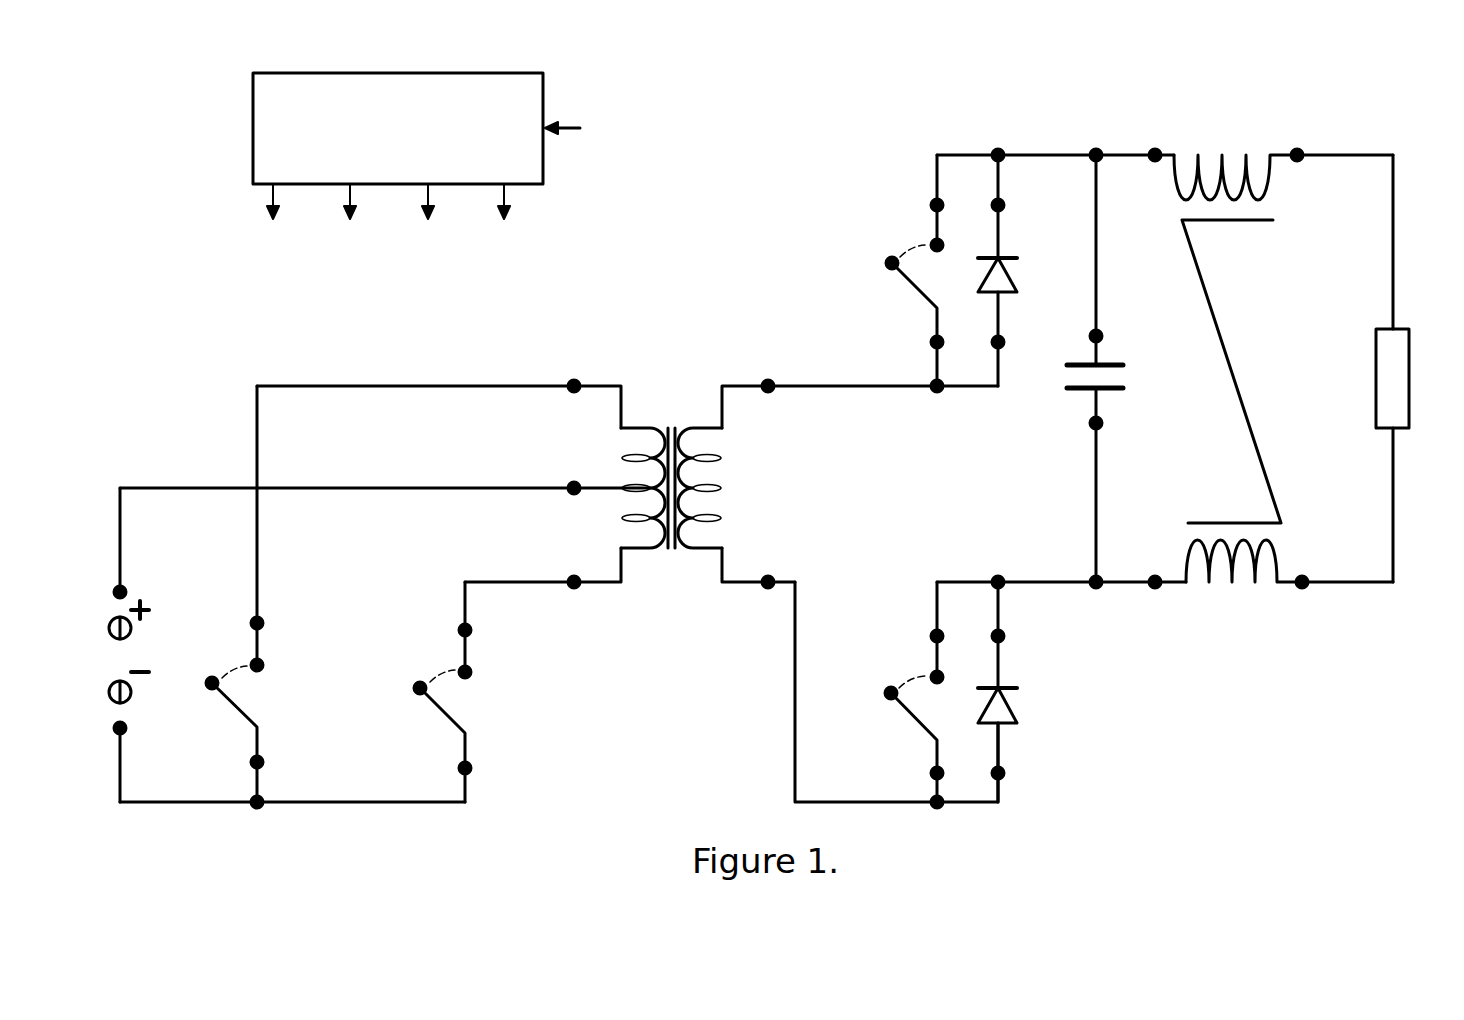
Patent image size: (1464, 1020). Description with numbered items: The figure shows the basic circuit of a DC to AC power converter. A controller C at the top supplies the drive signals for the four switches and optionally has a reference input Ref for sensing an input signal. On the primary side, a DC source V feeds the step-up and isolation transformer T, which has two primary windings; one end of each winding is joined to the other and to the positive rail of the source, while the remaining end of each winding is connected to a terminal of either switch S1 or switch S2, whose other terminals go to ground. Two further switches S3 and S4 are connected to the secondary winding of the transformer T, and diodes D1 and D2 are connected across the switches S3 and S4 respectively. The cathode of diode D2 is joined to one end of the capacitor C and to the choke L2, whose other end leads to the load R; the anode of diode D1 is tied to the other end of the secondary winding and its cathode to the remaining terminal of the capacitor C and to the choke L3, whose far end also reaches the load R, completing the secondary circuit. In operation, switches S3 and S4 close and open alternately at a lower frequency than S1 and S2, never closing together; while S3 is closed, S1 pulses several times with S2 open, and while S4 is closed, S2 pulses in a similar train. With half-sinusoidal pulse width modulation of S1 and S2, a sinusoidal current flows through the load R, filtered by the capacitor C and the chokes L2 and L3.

The controller / capacitor C is at (701, 330).
The reference input Ref is at (606, 137).
The DC source V is at (114, 645).
The switch S1 is at (234, 594).
The switch S2 is at (442, 692).
The switch S3 is at (914, 695).
The switch S4 is at (914, 273).
The step-up and isolation transformer T is at (809, 466).
The diode D1 is at (1014, 692).
The diode D2 is at (1018, 270).
The choke L2 is at (1283, 156).
The choke L3 is at (1289, 583).
The load R is at (1411, 368).